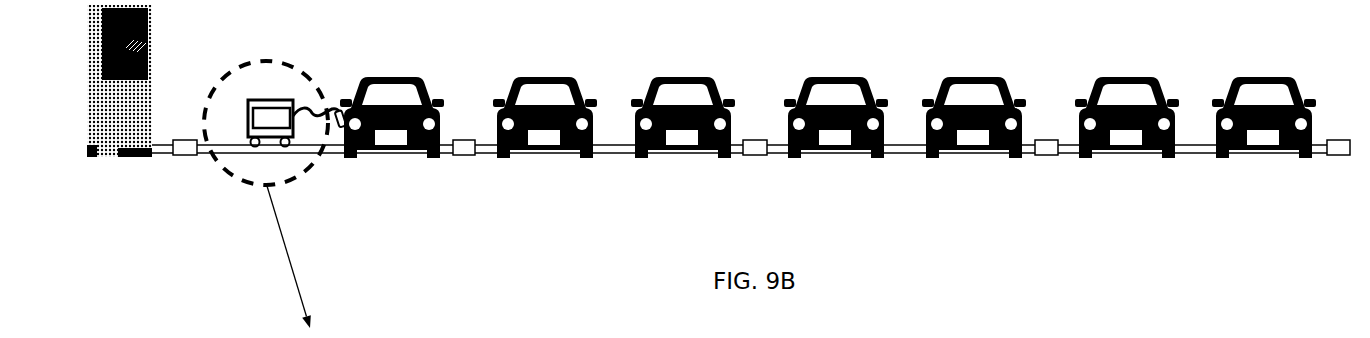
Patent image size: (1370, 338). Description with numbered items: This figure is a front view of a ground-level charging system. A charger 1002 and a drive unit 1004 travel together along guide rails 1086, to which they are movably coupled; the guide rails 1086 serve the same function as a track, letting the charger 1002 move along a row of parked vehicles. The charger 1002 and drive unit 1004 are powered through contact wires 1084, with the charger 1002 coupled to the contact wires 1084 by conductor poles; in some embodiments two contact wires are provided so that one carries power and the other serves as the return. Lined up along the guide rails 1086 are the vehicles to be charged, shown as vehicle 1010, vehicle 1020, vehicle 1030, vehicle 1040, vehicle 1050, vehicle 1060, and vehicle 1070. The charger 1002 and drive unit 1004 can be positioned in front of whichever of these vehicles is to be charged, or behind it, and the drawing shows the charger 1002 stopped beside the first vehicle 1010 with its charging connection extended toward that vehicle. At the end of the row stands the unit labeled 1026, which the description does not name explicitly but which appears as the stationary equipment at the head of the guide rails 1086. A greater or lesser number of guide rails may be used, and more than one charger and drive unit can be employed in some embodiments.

The charger 1002 is at (259, 94).
The drive unit 1004 is at (283, 91).
The vehicle 1010 is at (400, 157).
The vehicle 1020 is at (543, 158).
The vehicle 1030 is at (692, 158).
The vehicle 1040 is at (833, 158).
The vehicle 1050 is at (988, 158).
The vehicle 1060 is at (1127, 158).
The vehicle 1070 is at (1282, 159).
The power cabinet / charging station 1026 is at (112, 165).
The contact wires 1084 is at (322, 167).
The guide rails 1086 is at (220, 173).